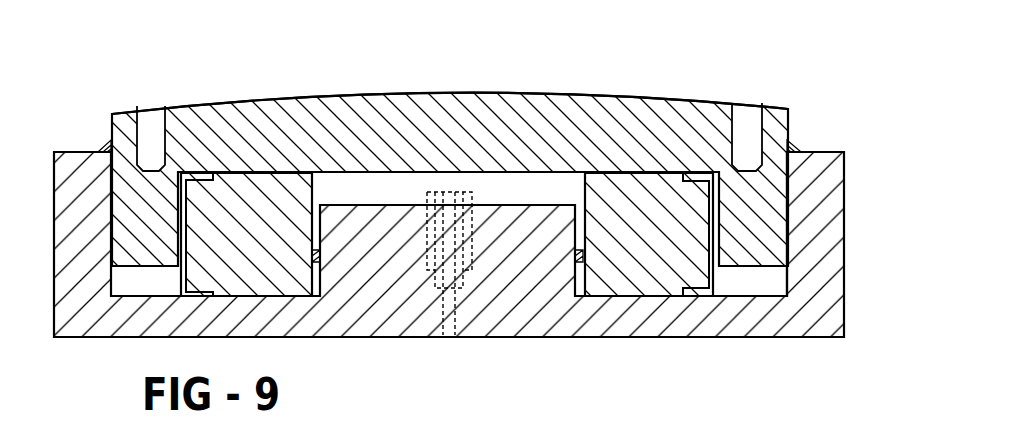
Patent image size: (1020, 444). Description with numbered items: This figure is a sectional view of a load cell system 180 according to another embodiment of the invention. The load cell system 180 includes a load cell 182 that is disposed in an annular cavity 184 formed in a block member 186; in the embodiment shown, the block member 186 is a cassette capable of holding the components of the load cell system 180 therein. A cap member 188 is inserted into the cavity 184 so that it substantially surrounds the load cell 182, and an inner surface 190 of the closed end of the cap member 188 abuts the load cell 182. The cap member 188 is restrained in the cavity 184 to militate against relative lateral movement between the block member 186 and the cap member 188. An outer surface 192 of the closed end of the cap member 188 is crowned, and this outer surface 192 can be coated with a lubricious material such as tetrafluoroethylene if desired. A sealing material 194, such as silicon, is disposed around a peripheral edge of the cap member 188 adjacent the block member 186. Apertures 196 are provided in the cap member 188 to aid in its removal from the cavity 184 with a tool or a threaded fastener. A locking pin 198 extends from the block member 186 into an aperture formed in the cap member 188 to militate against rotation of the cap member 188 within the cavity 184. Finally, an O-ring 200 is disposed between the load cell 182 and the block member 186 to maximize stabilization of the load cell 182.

The load cell system 180 is at (122, 78).
The load cell 182 is at (655, 278).
The annular cavity 184 is at (780, 275).
The block member 186 is at (835, 203).
The cap member 188 is at (450, 151).
The inner surface 190 is at (505, 175).
The outer surface 192 is at (389, 92).
The sealing material 194 is at (103, 146).
The apertures 196 is at (148, 115).
The locking pin 198 is at (443, 311).
The O-ring 200 is at (573, 258).